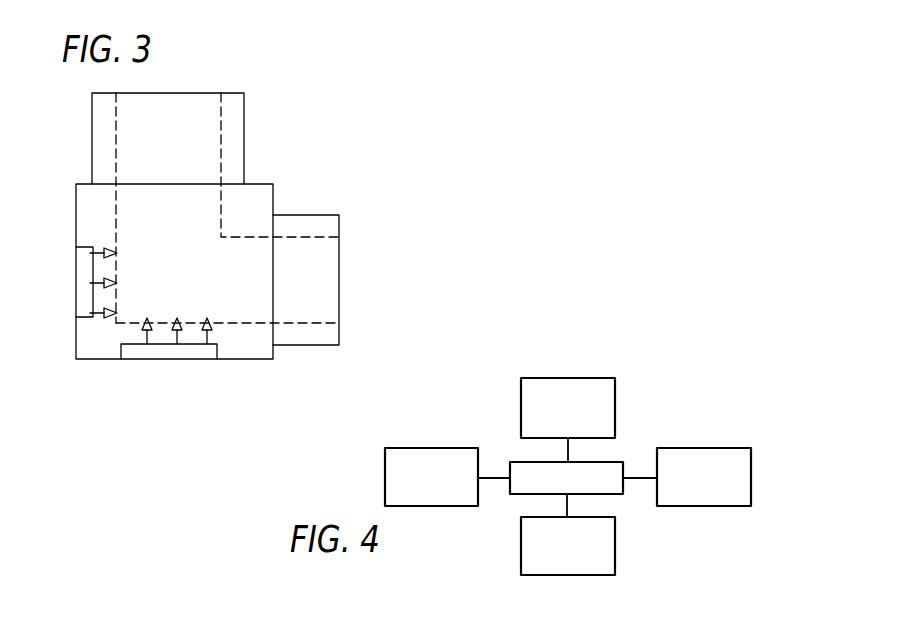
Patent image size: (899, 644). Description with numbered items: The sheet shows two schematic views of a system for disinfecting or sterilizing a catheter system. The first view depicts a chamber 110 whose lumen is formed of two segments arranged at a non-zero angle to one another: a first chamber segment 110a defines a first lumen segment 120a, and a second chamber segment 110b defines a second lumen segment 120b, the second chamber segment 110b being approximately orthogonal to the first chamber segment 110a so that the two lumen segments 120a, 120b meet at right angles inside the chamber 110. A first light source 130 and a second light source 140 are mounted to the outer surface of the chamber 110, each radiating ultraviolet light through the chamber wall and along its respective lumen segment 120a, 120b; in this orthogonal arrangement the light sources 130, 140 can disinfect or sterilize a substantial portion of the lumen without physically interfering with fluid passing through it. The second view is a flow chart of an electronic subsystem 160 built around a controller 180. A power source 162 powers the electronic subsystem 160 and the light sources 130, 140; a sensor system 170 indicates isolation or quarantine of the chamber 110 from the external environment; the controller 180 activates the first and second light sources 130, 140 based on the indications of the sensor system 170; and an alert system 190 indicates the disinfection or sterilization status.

In FIG. 3, the chamber 110 is at (379, 130).
In FIG. 3, the first chamber segment 110a is at (237, 112).
In FIG. 3, the second chamber segment 110b is at (307, 223).
In FIG. 3, the first lumen segment 120a is at (115, 134).
In FIG. 3, the second lumen segment 120b is at (318, 238).
In FIG. 3, the first light source 130 is at (157, 353).
In FIG. 4, the first light source 130 is at (568, 379).
In FIG. 3, the second light source 140 is at (76, 287).
In FIG. 4, the second light source 140 is at (568, 378).
In FIG. 4, the electronic subsystem 160 is at (531, 422).
In FIG. 4, the power source 162 is at (385, 473).
In FIG. 4, the sensor system 170 is at (521, 545).
In FIG. 4, the controller 180 is at (612, 495).
In FIG. 4, the alert system 190 is at (703, 506).